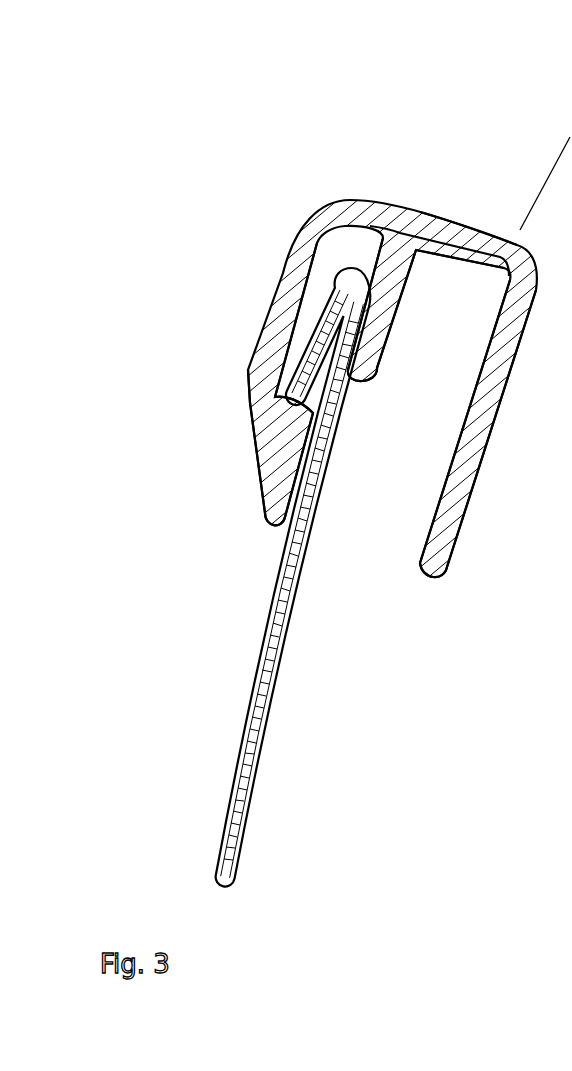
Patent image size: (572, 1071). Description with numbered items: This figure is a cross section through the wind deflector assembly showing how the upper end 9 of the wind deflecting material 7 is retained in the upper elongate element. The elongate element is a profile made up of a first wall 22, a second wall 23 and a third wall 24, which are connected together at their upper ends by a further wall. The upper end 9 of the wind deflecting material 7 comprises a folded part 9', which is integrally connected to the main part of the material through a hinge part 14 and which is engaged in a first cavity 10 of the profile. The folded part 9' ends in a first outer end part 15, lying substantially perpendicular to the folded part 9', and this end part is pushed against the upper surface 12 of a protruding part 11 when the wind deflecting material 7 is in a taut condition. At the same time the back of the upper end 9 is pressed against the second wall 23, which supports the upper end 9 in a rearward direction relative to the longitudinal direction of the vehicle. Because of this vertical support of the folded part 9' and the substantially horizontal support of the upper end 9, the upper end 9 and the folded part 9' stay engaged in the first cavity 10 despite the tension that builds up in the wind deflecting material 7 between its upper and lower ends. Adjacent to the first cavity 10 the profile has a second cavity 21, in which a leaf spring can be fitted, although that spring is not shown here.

The wind deflecting material 7 is at (246, 574).
The upper end 9 is at (332, 590).
The folded part 9' is at (198, 329).
The first cavity 10 is at (343, 246).
The protruding part 11 is at (292, 440).
The upper surface 12 is at (292, 412).
The hinge part 14 is at (379, 228).
The first outer end part 15 is at (284, 384).
The second cavity 21 is at (400, 290).
The first wall 22 is at (268, 340).
The second wall 23 is at (453, 297).
The third wall 24 is at (473, 453).